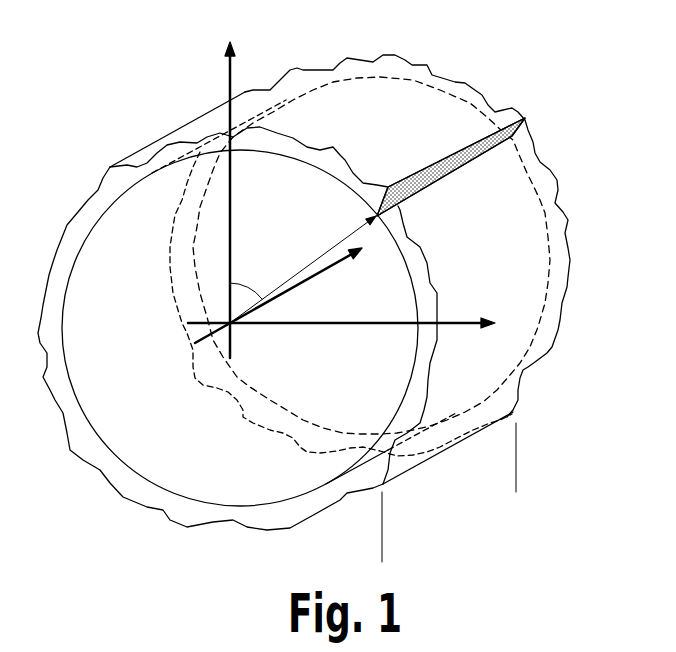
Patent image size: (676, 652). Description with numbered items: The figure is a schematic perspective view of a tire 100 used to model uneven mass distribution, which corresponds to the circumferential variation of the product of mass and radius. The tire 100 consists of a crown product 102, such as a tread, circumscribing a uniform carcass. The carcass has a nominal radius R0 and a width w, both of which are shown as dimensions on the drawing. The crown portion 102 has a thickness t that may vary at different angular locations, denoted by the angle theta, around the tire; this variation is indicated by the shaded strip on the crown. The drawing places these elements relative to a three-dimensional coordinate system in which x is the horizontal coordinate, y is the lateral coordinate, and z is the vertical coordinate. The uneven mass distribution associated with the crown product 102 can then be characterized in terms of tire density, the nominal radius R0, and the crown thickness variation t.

The tire 100 is at (324, 283).
The crown product 102 is at (568, 250).
The nominal radius R0 is at (303, 267).
The crown thickness t is at (313, 187).
The width w is at (512, 457).